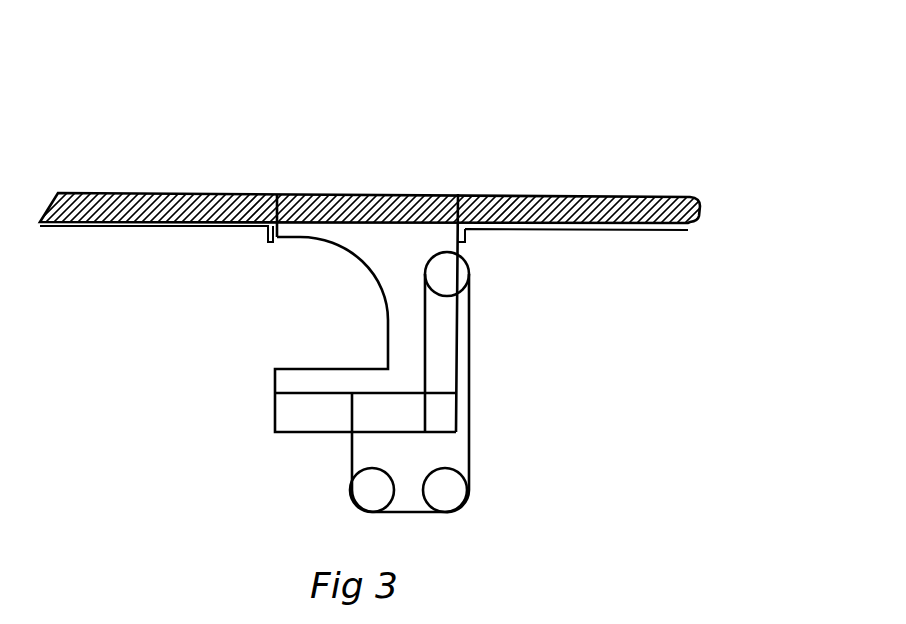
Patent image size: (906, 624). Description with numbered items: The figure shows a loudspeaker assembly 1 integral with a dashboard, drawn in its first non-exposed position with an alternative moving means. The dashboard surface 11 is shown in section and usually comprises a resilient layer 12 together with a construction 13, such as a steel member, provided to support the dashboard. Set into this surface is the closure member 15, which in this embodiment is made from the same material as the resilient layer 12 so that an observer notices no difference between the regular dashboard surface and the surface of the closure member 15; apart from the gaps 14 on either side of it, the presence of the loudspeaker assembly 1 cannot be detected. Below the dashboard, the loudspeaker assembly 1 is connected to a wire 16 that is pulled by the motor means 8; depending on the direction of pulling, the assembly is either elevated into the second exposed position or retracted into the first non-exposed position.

The loudspeaker assembly 1 is at (507, 402).
The motor means 8 is at (445, 497).
The dashboard surface 11 is at (588, 153).
The resilient layer 12 is at (636, 197).
The construction 13 is at (620, 230).
The gaps 14 is at (277, 194).
The closure member 15 is at (374, 194).
The wire 16 is at (468, 433).